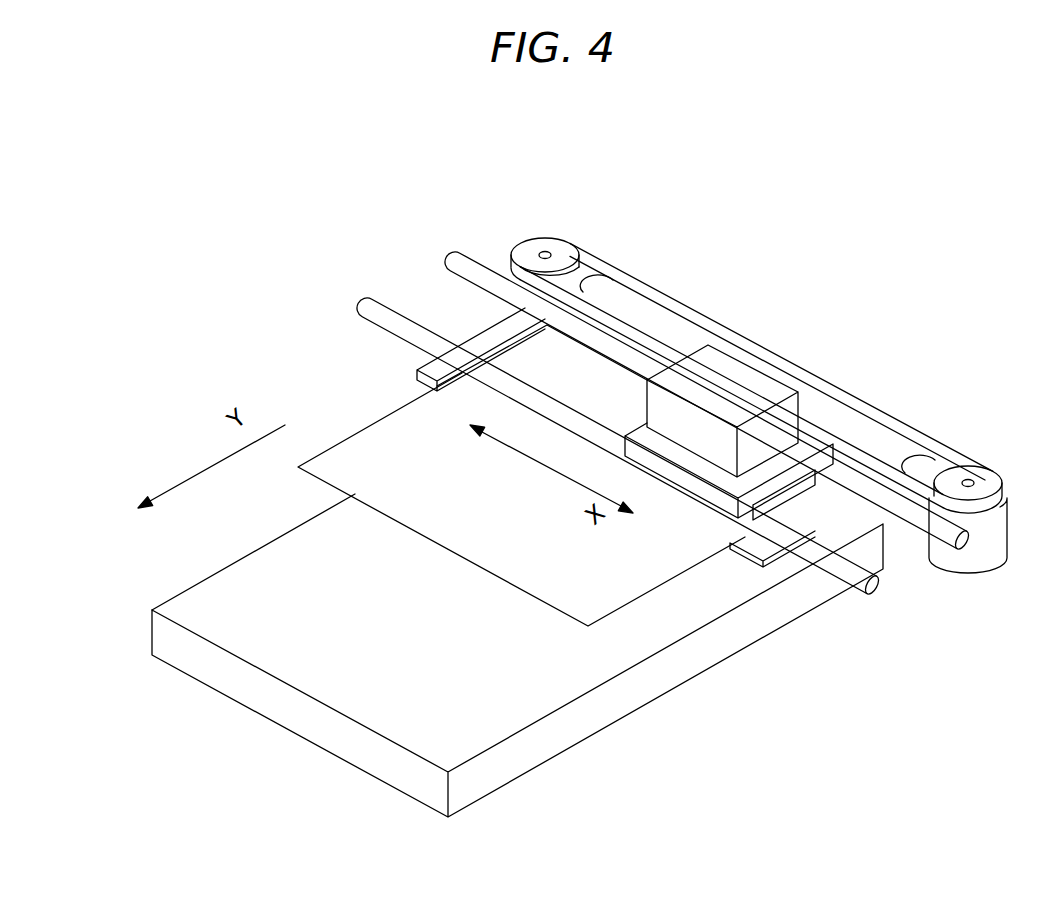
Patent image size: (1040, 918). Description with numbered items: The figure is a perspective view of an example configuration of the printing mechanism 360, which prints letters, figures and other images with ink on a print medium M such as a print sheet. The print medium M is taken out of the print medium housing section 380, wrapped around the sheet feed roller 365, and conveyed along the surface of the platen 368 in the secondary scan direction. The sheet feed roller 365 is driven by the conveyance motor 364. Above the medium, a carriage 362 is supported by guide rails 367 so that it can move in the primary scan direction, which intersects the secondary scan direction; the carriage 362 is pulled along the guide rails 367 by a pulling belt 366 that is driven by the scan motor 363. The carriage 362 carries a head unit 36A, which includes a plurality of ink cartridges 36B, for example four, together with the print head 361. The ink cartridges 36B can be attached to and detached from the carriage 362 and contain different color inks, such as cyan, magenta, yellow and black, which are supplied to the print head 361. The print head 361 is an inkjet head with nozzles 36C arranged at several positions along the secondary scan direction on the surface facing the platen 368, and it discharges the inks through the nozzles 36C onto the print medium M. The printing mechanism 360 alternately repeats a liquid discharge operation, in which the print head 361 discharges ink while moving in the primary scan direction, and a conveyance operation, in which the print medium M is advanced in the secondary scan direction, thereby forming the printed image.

The printing mechanism 360 is at (691, 411).
The print head 361 is at (803, 376).
The head unit 36A is at (722, 411).
The ink cartridges 36B is at (722, 411).
The nozzles 36C is at (722, 352).
The carriage 362 is at (693, 463).
The scan motor 363 is at (975, 565).
The conveyance motor 364 is at (545, 256).
The sheet feed roller 365 is at (908, 460).
The pulling belt 366 is at (661, 291).
The guide rails 367 is at (453, 262).
The platen 368 is at (757, 543).
The print medium housing section 380 is at (623, 697).
The print medium M is at (373, 448).